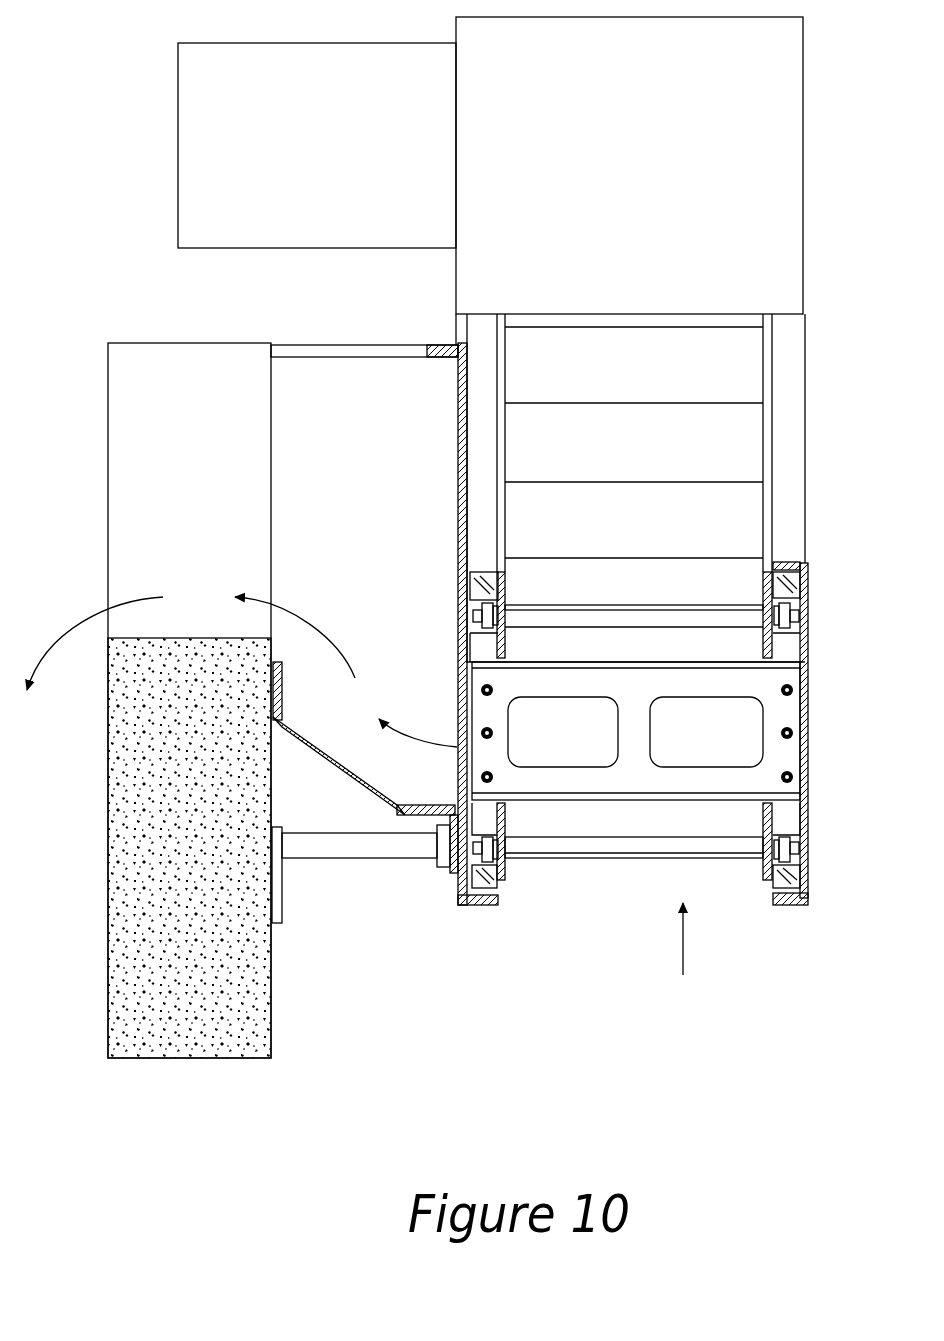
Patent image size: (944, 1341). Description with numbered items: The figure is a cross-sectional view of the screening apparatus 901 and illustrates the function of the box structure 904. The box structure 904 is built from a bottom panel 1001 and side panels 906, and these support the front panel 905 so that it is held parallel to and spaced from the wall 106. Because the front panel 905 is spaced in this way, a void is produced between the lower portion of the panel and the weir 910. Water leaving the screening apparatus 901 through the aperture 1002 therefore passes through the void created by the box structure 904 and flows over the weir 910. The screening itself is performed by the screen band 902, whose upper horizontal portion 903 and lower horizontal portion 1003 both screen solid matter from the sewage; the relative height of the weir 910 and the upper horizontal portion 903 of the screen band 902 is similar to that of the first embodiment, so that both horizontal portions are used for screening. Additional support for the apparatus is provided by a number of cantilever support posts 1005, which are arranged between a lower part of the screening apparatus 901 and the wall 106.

The wall 106 is at (187, 368).
The weir 910 is at (200, 733).
The side panel 906 is at (330, 393).
The box structure 904 is at (343, 328).
The front panel 905 is at (458, 468).
The upper horizontal portion 903 is at (693, 605).
The aperture 1002 is at (467, 748).
The screening apparatus 901 is at (682, 954).
The lower horizontal portion 1003 is at (625, 858).
The screen band 902 is at (748, 860).
The bottom panel 1001 is at (343, 777).
The cantilever support post 1005 is at (403, 843).